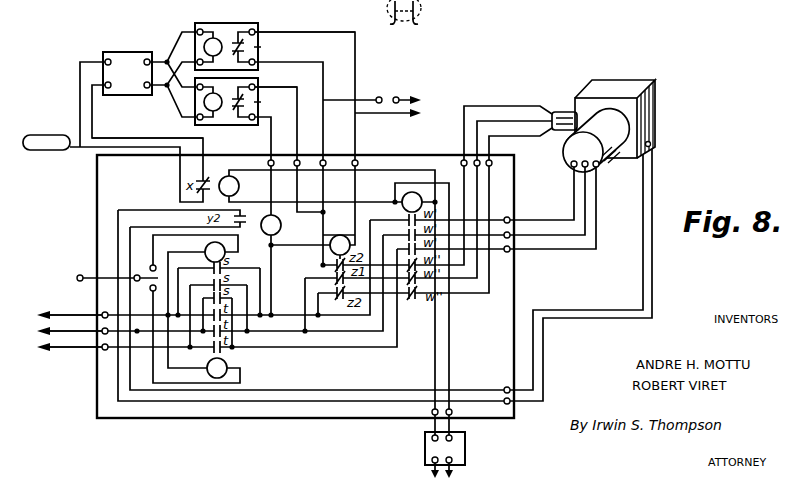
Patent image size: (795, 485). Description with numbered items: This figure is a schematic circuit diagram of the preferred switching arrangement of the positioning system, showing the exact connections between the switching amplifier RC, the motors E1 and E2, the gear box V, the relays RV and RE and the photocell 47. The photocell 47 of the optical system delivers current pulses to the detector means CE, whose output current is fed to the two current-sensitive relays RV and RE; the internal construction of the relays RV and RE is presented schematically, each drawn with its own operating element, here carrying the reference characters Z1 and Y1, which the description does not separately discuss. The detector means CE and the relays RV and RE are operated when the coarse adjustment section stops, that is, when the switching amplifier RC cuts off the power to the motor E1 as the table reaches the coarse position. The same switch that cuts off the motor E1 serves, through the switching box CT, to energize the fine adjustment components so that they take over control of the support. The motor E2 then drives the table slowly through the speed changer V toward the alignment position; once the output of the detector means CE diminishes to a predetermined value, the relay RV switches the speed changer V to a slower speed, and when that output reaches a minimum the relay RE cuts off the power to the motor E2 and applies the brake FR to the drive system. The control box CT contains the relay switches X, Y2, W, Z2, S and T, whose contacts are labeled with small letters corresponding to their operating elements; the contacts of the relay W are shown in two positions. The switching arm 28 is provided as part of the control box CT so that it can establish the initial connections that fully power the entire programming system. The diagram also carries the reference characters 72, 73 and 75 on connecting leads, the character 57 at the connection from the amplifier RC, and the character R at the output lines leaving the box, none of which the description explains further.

The photocell 47 is at (38, 151).
The connecting lead 75 is at (130, 141).
The connecting lead 72 is at (306, 44).
The connecting lead 73 is at (283, 98).
The relay contact / leads from RC 57 is at (421, 6).
The switching arm 28 is at (90, 271).
The detector means CE is at (127, 73).
The current-sensitive relay RV is at (236, 37).
The current-sensitive relay RE is at (237, 111).
The relay coil Z1 is at (213, 47).
The relay coil Y1 is at (213, 102).
The brake FR is at (411, 97).
The switching amplifier RC is at (424, 458).
The output lines R is at (73, 349).
The switching box CT is at (510, 284).
The speed changer V is at (630, 80).
The motor E1 is at (604, 156).
The motor E2 is at (560, 111).
The relay switch X is at (229, 186).
The relay switch Y2 is at (271, 225).
The relay switch Z2 is at (340, 245).
The relay W is at (412, 202).
The relay switch S is at (215, 252).
The relay switch T is at (217, 368).